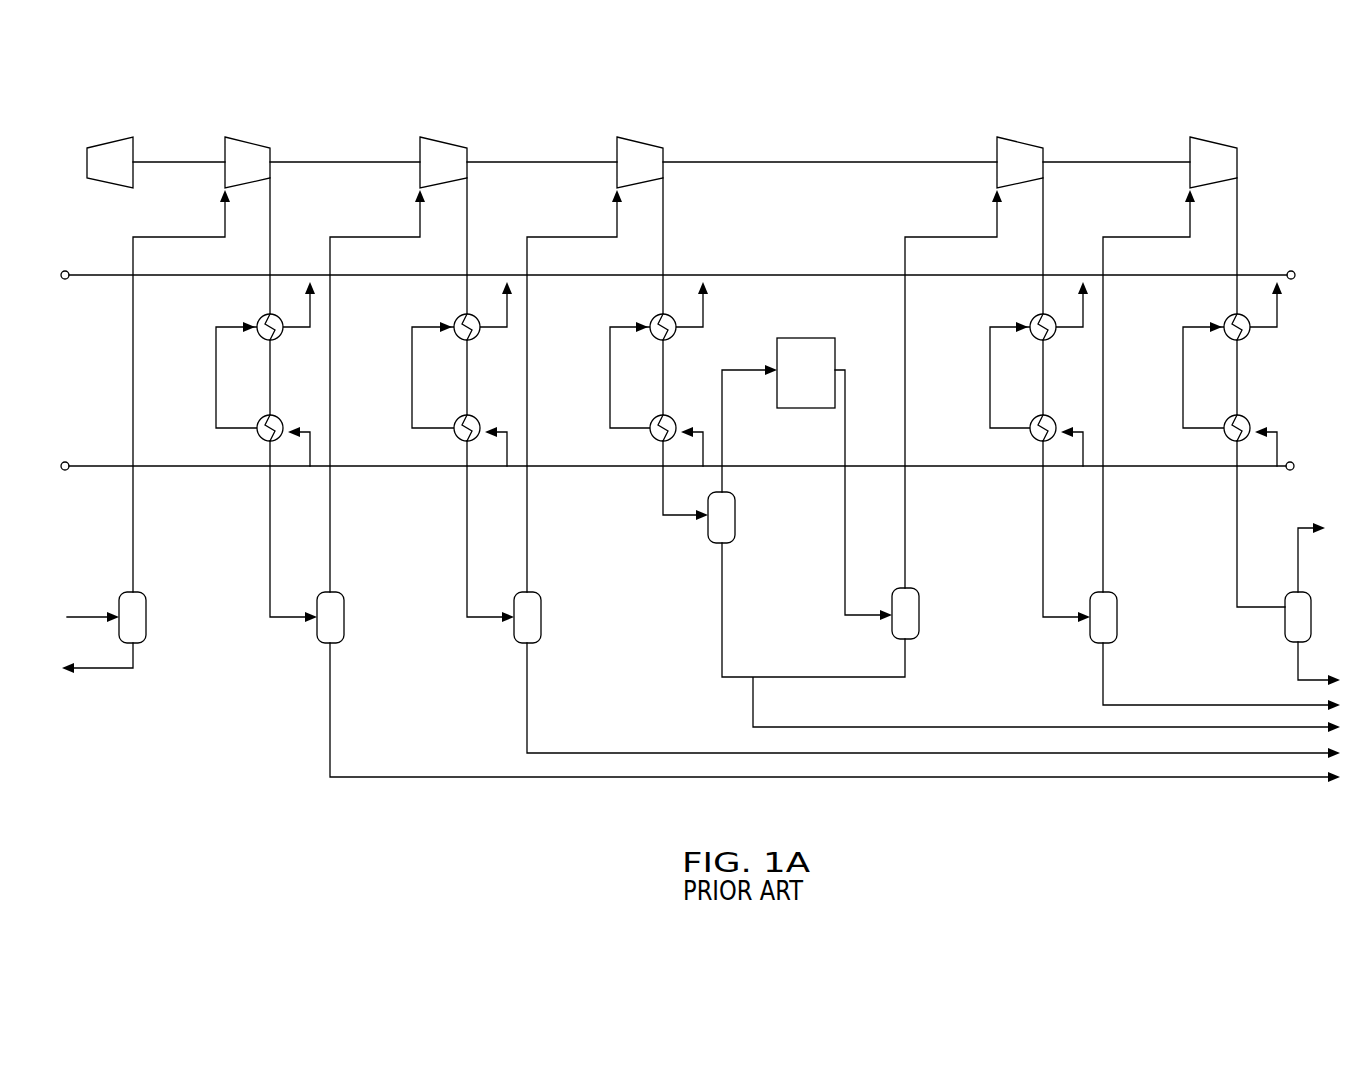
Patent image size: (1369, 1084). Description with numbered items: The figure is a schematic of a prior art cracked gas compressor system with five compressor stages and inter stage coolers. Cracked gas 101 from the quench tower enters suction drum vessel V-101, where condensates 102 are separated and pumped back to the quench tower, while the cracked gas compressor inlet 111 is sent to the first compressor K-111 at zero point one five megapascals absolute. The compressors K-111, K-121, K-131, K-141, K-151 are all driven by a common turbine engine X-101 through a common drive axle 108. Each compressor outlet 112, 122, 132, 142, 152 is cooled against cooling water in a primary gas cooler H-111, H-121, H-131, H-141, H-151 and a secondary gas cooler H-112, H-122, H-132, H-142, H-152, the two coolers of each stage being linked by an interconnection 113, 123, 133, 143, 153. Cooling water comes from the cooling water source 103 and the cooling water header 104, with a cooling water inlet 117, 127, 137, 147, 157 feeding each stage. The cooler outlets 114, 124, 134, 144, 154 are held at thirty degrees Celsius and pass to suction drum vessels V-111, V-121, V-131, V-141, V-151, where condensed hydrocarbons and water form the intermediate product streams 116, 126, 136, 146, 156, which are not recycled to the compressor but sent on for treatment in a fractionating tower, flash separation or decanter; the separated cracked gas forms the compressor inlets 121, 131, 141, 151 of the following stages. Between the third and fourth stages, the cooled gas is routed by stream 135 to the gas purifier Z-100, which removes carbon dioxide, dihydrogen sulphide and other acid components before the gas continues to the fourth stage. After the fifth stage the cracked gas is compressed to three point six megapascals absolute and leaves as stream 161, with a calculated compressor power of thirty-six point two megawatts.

The cracked gas inlet 101 is at (82, 615).
The condensates 102 is at (118, 666).
The cooling water source 103 is at (73, 272).
The cooling water header 104 is at (97, 464).
The common drive axle 108 is at (175, 160).
The compressor inlet 111 is at (131, 540).
The compressor outlet 112 is at (268, 273).
The interconnection 113 is at (268, 380).
The cracked gas inlet 114 is at (268, 510).
The intermediate product stream 116 is at (414, 775).
The cooling water inlet 117 is at (308, 463).
The compressor inlet 121 is at (328, 577).
The compressor outlet 122 is at (465, 273).
The interconnection 123 is at (465, 380).
The cracked gas inlet 124 is at (465, 510).
The intermediate product stream 126 is at (602, 752).
The cooling water inlet 127 is at (505, 463).
The compressor inlet 131 is at (525, 577).
The compressor outlet 132 is at (661, 273).
The interconnection 133 is at (661, 380).
The cracked gas inlet 134 is at (661, 503).
The gas purifier feed stream 135 is at (752, 368).
The intermediate product stream 136 is at (996, 725).
The cooling water inlet 137 is at (701, 463).
The compressor inlet 141 is at (903, 578).
The compressor outlet 142 is at (1041, 273).
The interconnection 143 is at (1041, 380).
The cracked gas inlet 144 is at (1041, 515).
The intermediate product stream 146 is at (1222, 703).
The cooling water inlet 147 is at (1081, 463).
The compressor inlet 151 is at (1101, 583).
The compressor outlet 152 is at (1235, 273).
The interconnection 153 is at (1235, 380).
The cracked gas inlet 154 is at (1235, 508).
The intermediate product stream 156 is at (1295, 678).
The cooling water inlet 157 is at (1275, 463).
The compressed cracked gas stream 161 is at (1305, 525).
The turbine engine X-101 is at (111, 180).
The compressor K-111 is at (253, 180).
The compressor K-121 is at (445, 180).
The compressor K-131 is at (644, 180).
The compressor K-141 is at (1024, 180).
The compressor K-151 is at (1221, 180).
The primary gas cooler H-111 is at (290, 342).
The secondary gas cooler H-112 is at (290, 415).
The primary gas cooler H-121 is at (487, 342).
The secondary gas cooler H-122 is at (487, 415).
The primary gas cooler H-131 is at (685, 342).
The secondary gas cooler H-132 is at (681, 415).
The primary gas cooler H-141 is at (1064, 342).
The secondary gas cooler H-142 is at (1061, 415).
The primary gas cooler H-151 is at (1257, 342).
The secondary gas cooler H-152 is at (1257, 415).
The suction drum vessel V-101 is at (152, 636).
The suction drum vessel V-111 is at (350, 636).
The suction drum vessel V-121 is at (547, 636).
The suction drum vessel V-131 is at (929, 632).
The suction drum vessel V-141 is at (1125, 633).
The suction drum vessel V-151 is at (1320, 623).
The gas purifier Z-100 is at (834, 479).